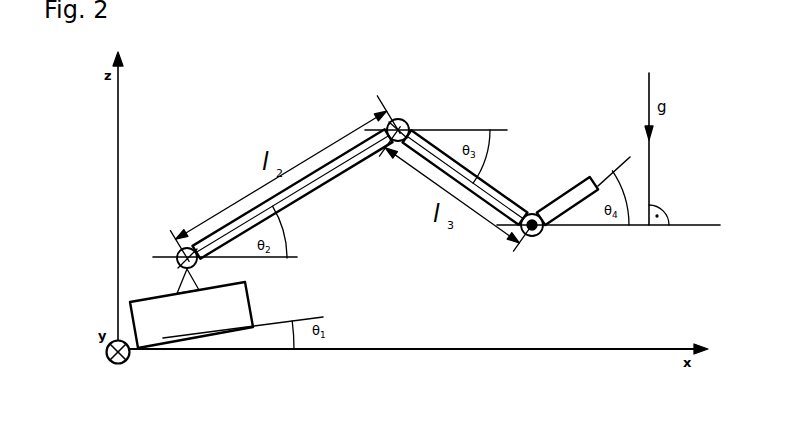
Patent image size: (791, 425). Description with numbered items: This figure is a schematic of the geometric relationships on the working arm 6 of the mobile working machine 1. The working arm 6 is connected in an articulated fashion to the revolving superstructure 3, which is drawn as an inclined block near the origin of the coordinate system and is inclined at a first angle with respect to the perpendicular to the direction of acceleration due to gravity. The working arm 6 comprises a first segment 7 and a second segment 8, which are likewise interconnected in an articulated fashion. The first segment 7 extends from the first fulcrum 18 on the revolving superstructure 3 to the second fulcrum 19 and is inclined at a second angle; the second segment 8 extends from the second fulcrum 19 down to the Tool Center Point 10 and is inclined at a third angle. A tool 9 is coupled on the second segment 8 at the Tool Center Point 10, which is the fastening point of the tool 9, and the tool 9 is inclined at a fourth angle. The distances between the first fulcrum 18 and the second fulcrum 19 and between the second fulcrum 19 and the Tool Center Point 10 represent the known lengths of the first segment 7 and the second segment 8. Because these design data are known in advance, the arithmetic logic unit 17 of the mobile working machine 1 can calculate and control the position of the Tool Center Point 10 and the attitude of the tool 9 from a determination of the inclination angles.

The mobile working machine 1 is at (220, 137).
The revolving superstructure 3 is at (140, 313).
The working arm 6 is at (333, 180).
The first segment 7 is at (340, 158).
The second segment 8 is at (501, 185).
The tool 9 is at (578, 208).
The Tool Center Point (TCP) 10 is at (525, 237).
The arithmetic logic unit 17 is at (427, 17).
The first fulcrum 18 is at (176, 250).
The second fulcrum 19 is at (407, 120).